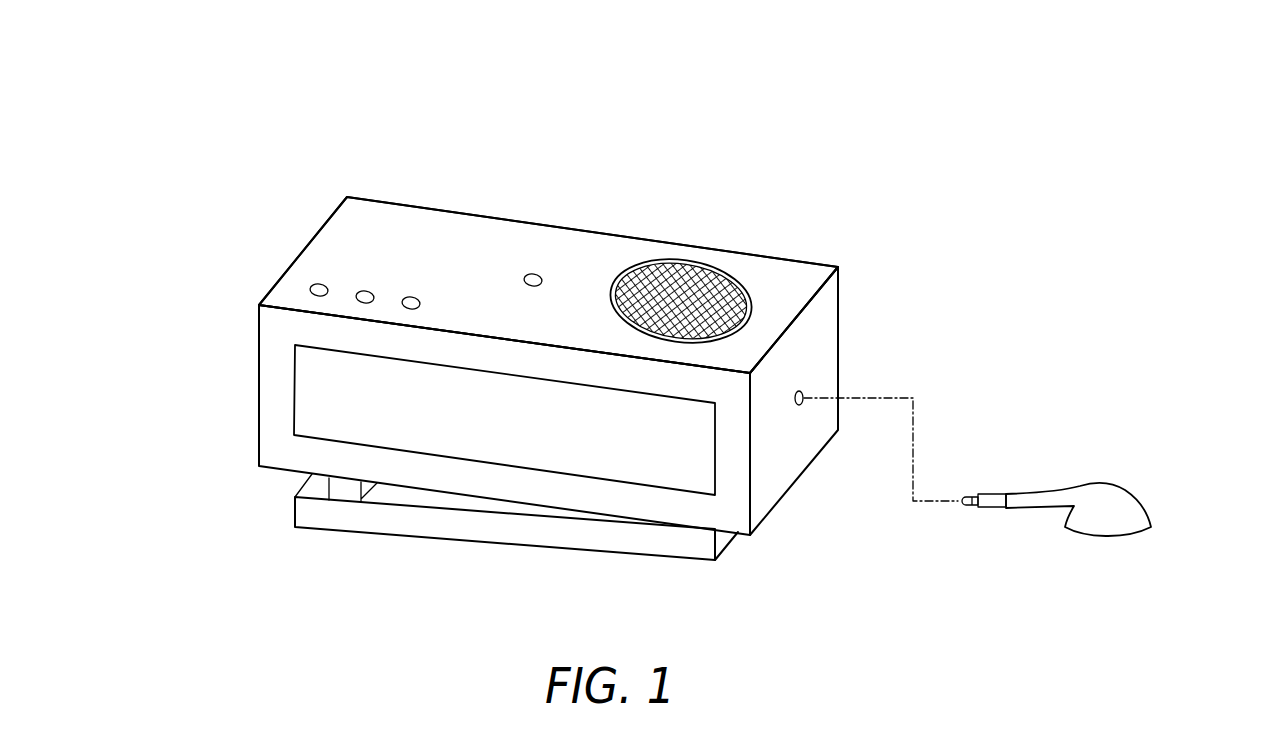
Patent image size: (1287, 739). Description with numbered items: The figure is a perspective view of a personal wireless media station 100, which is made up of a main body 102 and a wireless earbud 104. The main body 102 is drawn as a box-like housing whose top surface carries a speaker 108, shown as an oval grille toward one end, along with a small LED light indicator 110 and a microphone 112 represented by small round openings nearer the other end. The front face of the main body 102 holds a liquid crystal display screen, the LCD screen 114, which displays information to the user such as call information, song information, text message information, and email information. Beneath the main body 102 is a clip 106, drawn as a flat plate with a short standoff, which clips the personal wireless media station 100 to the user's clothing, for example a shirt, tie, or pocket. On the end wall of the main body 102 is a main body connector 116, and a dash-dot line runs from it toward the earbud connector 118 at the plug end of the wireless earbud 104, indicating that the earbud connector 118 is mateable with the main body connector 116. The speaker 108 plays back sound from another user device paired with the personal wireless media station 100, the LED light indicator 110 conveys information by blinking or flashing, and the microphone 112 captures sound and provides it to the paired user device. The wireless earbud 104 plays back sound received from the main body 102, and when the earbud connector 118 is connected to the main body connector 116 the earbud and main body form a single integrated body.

The personal wireless media station 100 is at (279, 118).
The main body 102 is at (444, 242).
The wireless earbud 104 is at (1127, 507).
The clip 106 is at (337, 517).
The speaker 108 is at (690, 267).
The LED light indicator 110 is at (541, 278).
The microphone 112 is at (328, 261).
The LCD screen 114 is at (323, 400).
The main body connector 116 is at (815, 382).
The earbud connector 118 is at (978, 498).